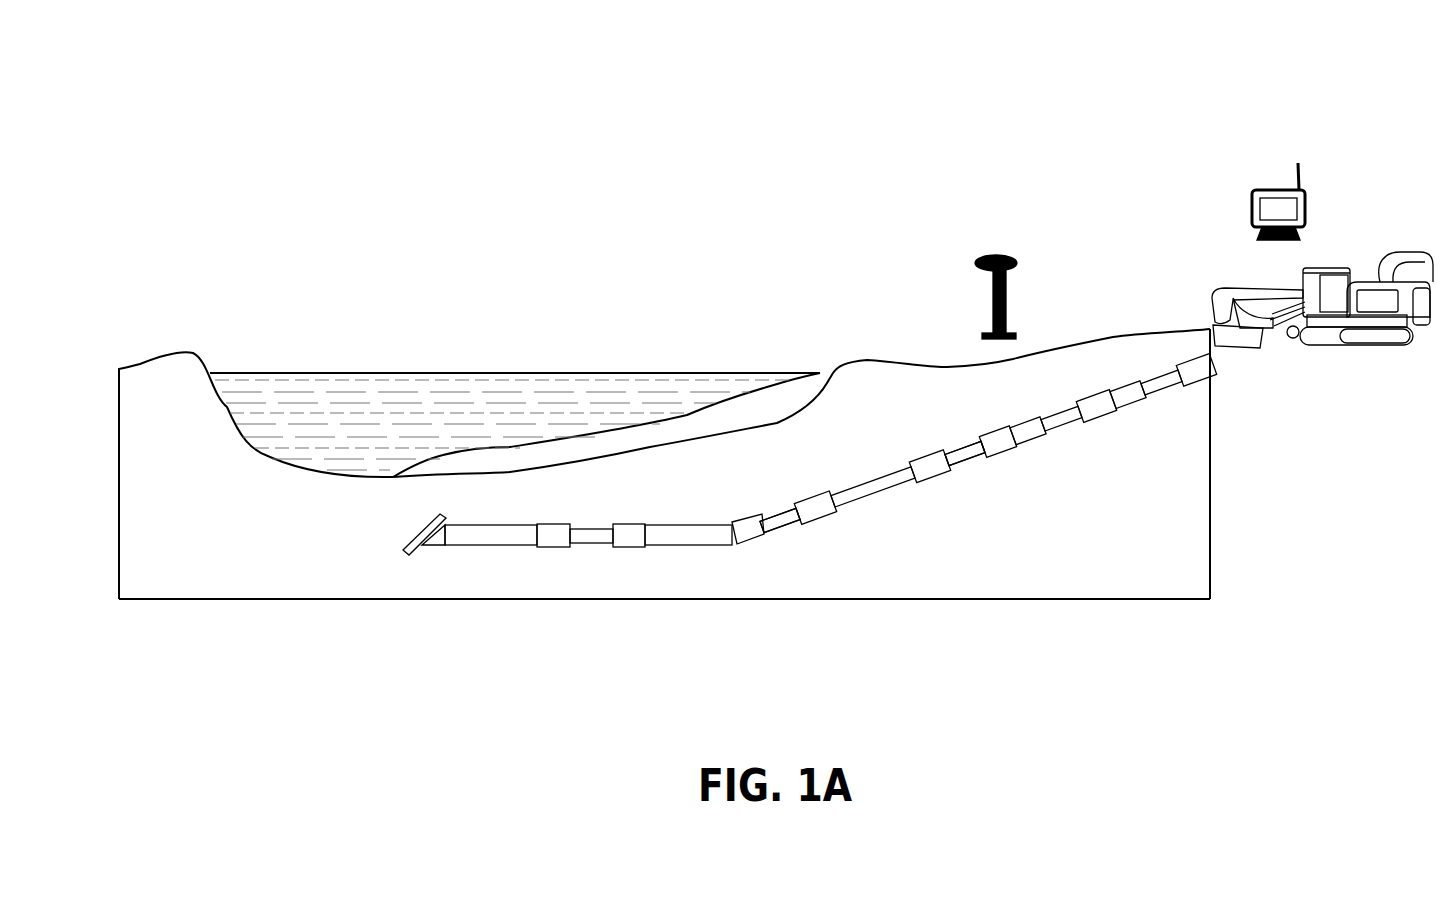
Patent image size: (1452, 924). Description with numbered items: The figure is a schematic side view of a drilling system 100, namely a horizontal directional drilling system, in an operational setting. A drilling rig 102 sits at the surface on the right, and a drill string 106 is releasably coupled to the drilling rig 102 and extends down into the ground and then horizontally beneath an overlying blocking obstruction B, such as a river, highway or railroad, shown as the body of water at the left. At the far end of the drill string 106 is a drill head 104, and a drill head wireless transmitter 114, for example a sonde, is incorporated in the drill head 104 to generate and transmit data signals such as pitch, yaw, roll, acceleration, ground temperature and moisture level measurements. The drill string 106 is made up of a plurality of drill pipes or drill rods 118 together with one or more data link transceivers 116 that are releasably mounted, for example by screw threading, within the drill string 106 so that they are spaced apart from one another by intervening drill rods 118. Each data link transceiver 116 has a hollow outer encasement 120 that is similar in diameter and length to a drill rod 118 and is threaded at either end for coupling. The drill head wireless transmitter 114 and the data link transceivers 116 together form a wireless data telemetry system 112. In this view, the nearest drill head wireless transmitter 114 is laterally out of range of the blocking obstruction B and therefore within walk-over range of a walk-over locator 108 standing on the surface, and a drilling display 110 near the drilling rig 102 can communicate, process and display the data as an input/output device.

The drilling system 100 is at (862, 176).
The drilling rig 102 is at (1407, 253).
The drill head 104 is at (428, 566).
The drill string 106 is at (682, 612).
The walk-over locator 108 is at (1007, 255).
The drilling display 110 is at (1268, 190).
The wireless data telemetry system 112 is at (920, 345).
The drill head wireless transmitter 114 is at (515, 547).
The data link transceiver 116 is at (660, 547).
The drill pipe or drill rod 118 is at (783, 526).
The hollow outer encasement 120 is at (717, 547).
The blocking obstruction B is at (322, 336).